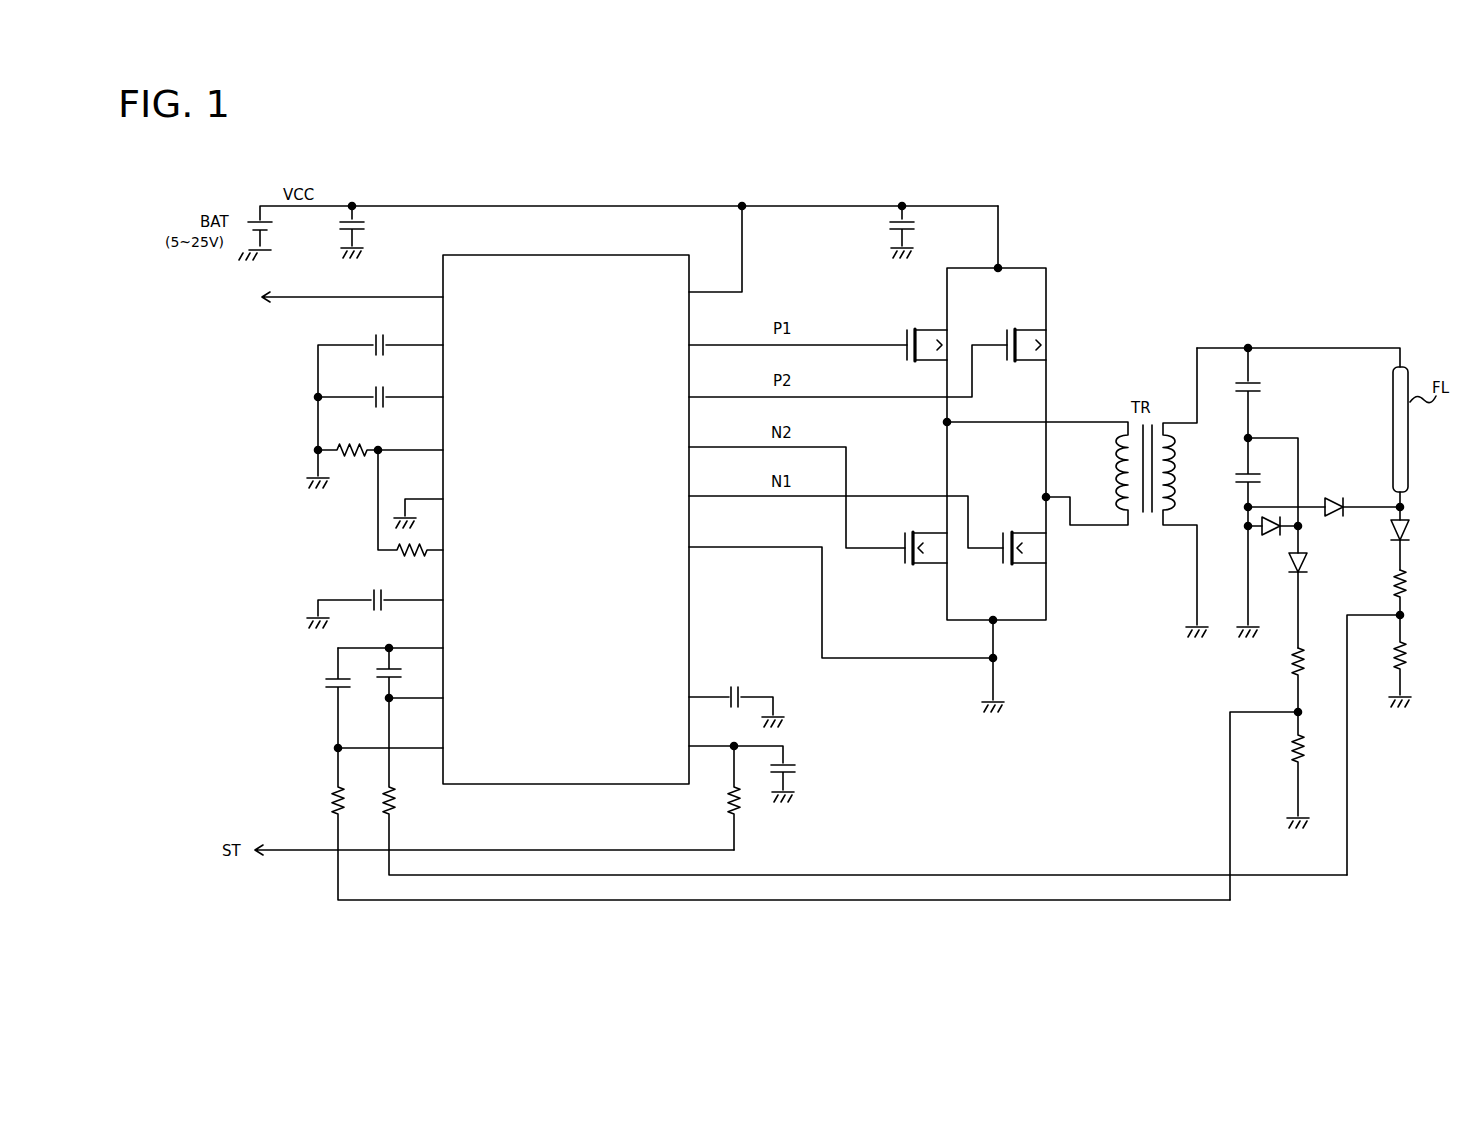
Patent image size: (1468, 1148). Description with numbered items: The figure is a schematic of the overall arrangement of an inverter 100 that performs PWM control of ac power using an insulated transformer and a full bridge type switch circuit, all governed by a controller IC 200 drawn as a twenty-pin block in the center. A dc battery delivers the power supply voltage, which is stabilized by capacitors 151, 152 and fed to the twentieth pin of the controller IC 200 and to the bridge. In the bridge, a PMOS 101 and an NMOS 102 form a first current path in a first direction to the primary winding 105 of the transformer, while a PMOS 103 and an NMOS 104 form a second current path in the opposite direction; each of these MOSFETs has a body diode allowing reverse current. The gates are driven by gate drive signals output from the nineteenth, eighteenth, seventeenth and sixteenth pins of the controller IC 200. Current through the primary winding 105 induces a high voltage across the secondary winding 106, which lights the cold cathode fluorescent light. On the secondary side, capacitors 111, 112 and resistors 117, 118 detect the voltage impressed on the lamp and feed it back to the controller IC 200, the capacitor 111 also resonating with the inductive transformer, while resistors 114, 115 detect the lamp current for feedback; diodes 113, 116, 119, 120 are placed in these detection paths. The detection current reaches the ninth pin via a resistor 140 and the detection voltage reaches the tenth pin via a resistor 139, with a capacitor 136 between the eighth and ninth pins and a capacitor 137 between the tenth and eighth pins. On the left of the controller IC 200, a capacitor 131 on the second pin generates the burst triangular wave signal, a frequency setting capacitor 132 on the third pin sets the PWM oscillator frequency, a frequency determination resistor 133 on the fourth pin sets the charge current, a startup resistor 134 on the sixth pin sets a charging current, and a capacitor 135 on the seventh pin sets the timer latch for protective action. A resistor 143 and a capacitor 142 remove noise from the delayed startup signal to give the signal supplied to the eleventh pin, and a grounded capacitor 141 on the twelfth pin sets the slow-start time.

The inverter 100 is at (1112, 153).
The controller IC 200 is at (537, 254).
The PMOS 101 is at (925, 329).
The NMOS 102 is at (1024, 566).
The PMOS 103 is at (1026, 329).
The NMOS 104 is at (926, 566).
The primary winding 105 is at (1037, 473).
The secondary winding 106 is at (1188, 492).
The capacitor 111 is at (1266, 393).
The capacitor 112 is at (1260, 472).
The diode 113 is at (1417, 538).
The resistor 114 is at (1419, 592).
The resistor 115 is at (1415, 661).
The diode 116 is at (1316, 600).
The resistor 117 is at (1316, 680).
The resistor 118 is at (1314, 770).
The diode 119 is at (1324, 496).
The diode 120 is at (1273, 540).
The capacitor 131 is at (380, 357).
The frequency setting capacitor 132 is at (380, 410).
The frequency determination resistor 133 is at (380, 437).
The startup resistor 134 is at (410, 513).
The capacitor 135 is at (375, 595).
The capacitor 136 is at (404, 673).
The capacitor 137 is at (323, 698).
The resistor 139 is at (781, 824).
The resistor 140 is at (865, 786).
The capacitor 141 is at (736, 695).
The capacitor 142 is at (781, 774).
The resistor 143 is at (714, 798).
The capacitor 151 is at (370, 232).
The capacitor 152 is at (921, 232).